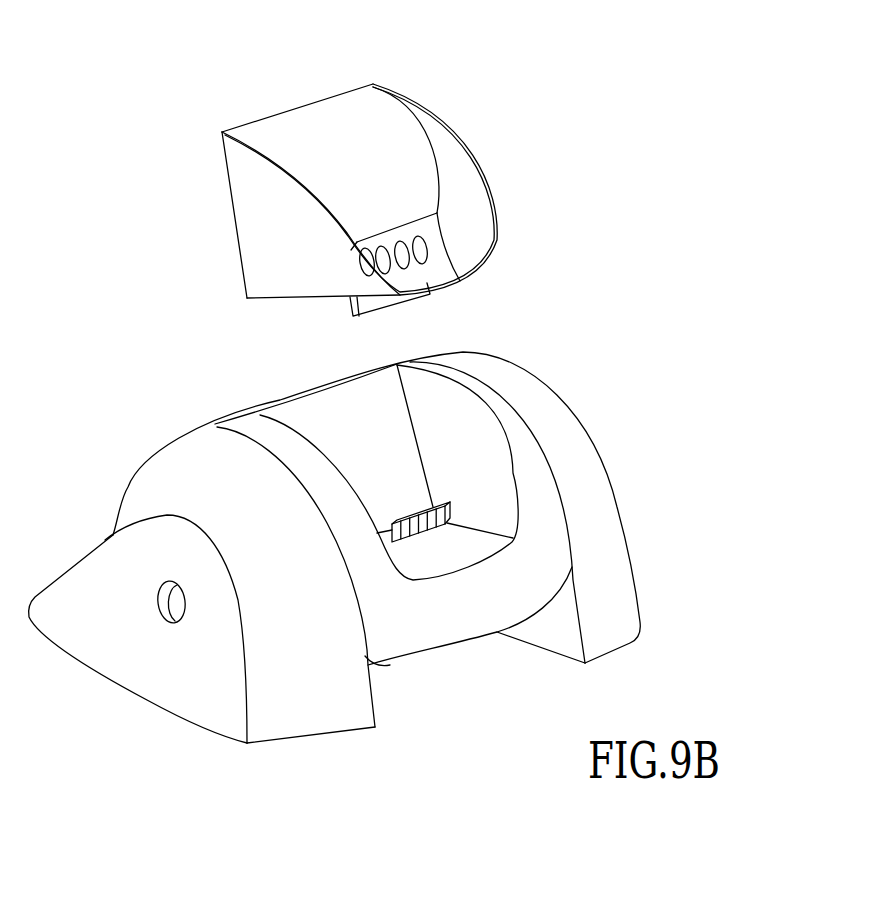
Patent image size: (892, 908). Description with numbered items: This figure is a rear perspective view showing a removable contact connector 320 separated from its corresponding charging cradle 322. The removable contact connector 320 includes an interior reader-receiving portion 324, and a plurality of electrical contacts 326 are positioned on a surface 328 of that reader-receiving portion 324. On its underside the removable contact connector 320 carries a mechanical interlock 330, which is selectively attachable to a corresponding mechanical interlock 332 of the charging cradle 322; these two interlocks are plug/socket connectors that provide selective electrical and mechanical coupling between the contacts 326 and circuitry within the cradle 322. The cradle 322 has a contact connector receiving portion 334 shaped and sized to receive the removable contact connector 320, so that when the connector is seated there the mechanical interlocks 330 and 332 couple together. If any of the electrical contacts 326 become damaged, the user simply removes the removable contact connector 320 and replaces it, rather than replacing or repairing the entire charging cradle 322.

The removable contact connector 320 is at (383, 196).
The charging cradle 322 is at (361, 523).
The interior reader-receiving portion 324 is at (407, 205).
The electrical contacts 326 is at (427, 247).
The surface 328 is at (440, 262).
The mechanical interlock 330 is at (348, 308).
The mechanical interlock 332 is at (418, 543).
The contact connector receiving portion 334 is at (473, 480).